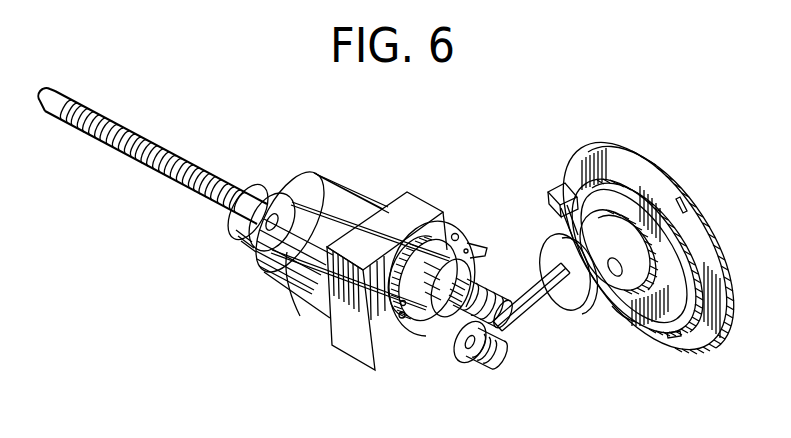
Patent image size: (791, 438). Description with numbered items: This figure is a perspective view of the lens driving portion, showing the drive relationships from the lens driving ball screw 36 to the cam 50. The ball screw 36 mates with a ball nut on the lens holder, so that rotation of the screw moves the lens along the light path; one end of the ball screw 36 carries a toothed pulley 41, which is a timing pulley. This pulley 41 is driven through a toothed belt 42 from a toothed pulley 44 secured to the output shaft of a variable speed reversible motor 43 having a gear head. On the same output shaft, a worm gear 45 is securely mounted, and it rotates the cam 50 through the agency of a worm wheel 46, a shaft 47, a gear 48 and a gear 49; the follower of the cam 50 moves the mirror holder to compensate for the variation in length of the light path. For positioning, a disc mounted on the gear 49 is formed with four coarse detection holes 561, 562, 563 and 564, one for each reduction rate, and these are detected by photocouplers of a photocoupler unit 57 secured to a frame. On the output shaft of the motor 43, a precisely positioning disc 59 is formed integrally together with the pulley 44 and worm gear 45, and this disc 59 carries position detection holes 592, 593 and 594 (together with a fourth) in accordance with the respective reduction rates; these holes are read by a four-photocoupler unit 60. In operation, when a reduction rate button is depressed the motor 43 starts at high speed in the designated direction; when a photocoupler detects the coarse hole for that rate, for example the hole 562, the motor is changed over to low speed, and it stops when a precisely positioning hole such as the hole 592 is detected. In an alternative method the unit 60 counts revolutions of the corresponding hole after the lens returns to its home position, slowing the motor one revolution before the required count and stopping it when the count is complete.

The ball screw 36 is at (167, 175).
The toothed pulley 41 is at (270, 186).
The toothed belt 42 is at (280, 280).
The variable speed reversible motor 43 is at (343, 176).
The toothed pulley 44 is at (447, 312).
The worm gear 45 is at (500, 325).
The worm wheel 46 is at (487, 362).
The shaft 47 is at (543, 307).
The gear 48 is at (587, 307).
The gear 49 is at (718, 257).
The cam 50 is at (612, 200).
The photocoupler unit 57 is at (551, 185).
The precisely positioning disc 59 is at (397, 303).
The four-photocoupler unit 60 is at (480, 262).
The detection hole 561 is at (620, 313).
The detection hole 562 is at (674, 340).
The detection hole 563 is at (679, 200).
The detection hole 564 is at (568, 200).
The position detection hole 592 is at (410, 318).
The position detection hole 593 is at (456, 236).
The position detection hole 594 is at (478, 250).